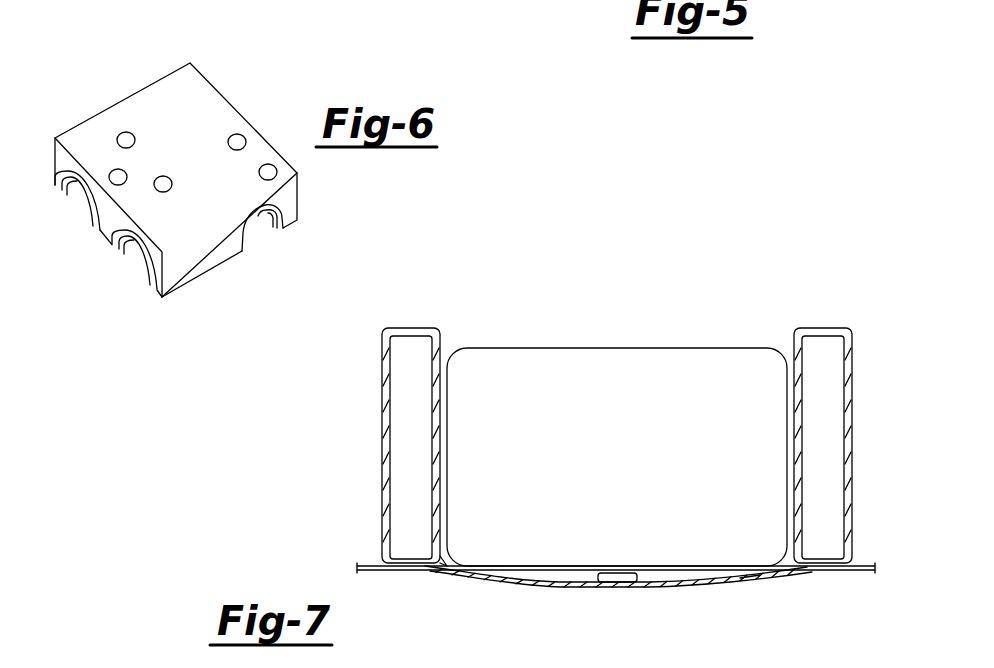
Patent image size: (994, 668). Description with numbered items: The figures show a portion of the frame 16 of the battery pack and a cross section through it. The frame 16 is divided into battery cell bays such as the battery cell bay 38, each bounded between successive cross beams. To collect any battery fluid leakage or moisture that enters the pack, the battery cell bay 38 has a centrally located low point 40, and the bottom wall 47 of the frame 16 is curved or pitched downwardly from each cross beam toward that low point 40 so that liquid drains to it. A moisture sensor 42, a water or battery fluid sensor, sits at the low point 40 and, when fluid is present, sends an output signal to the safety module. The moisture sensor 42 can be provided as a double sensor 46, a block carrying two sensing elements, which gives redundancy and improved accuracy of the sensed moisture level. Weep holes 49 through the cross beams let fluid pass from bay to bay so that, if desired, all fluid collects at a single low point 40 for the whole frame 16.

In FIG. 7, the frame 16 is at (721, 305).
In FIG. 7, the battery cell bay 38 is at (663, 367).
In FIG. 7, the low point 40 is at (582, 578).
In FIG. 6, the moisture sensor 42 is at (166, 90).
In FIG. 7, the moisture sensor 42 is at (617, 573).
In FIG. 6, the double sensor 46 is at (145, 276).
In FIG. 7, the bottom wall 47 is at (730, 581).
In FIG. 7, the weep holes 49 is at (442, 573).